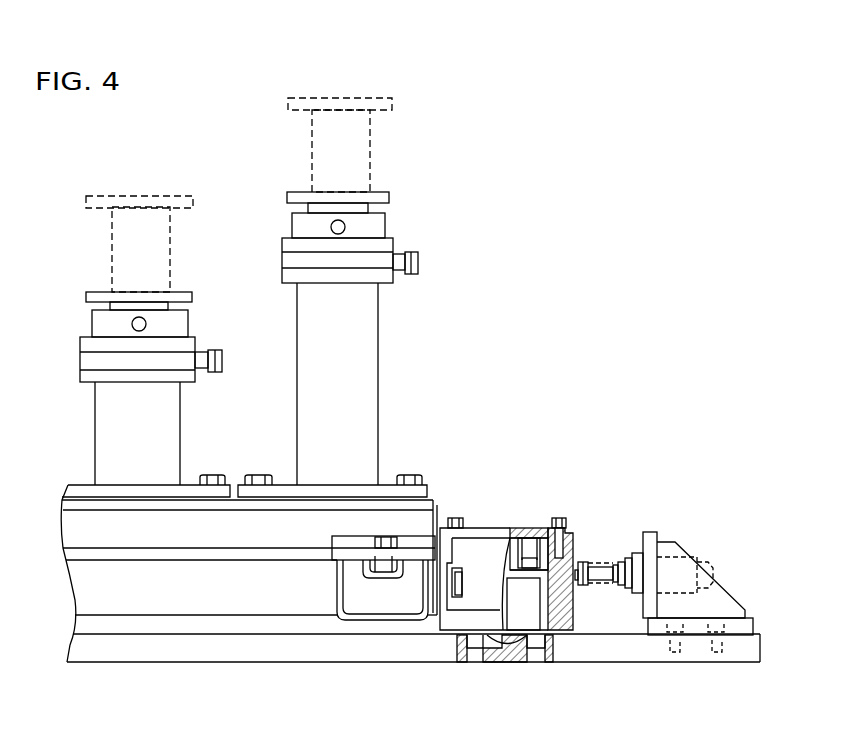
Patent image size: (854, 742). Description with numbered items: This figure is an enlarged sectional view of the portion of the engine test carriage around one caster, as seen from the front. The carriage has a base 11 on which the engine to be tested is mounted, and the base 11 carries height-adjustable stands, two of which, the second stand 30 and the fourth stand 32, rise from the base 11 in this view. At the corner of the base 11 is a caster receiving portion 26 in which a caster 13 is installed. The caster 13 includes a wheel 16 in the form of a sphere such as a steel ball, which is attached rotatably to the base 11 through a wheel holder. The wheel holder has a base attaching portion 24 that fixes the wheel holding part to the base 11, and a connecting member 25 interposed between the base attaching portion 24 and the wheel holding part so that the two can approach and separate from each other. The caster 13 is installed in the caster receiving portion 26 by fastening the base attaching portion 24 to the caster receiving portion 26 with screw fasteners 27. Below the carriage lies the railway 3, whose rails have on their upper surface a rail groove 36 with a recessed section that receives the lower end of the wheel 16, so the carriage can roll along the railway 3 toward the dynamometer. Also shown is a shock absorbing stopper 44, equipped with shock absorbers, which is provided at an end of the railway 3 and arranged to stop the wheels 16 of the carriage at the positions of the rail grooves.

The railway 3 is at (515, 663).
The base 11 is at (272, 600).
The second caster 13 is at (530, 610).
The wheel 16 is at (502, 663).
The base attaching portion 24 is at (537, 528).
The connecting member 25 is at (527, 553).
The caster receiving portion 26 is at (575, 557).
The screw fastener 27 is at (452, 518).
The second stand 30 is at (95, 292).
The fourth stand 32 is at (373, 193).
The rail groove 36 is at (485, 662).
The shock absorbing stopper 44 is at (645, 532).